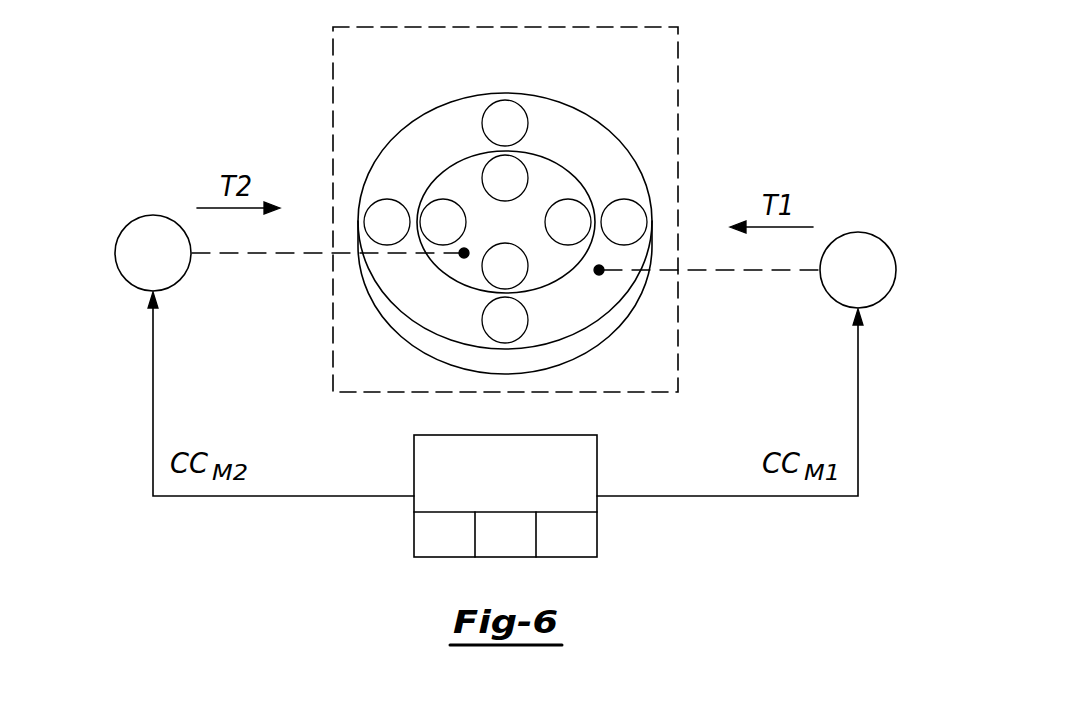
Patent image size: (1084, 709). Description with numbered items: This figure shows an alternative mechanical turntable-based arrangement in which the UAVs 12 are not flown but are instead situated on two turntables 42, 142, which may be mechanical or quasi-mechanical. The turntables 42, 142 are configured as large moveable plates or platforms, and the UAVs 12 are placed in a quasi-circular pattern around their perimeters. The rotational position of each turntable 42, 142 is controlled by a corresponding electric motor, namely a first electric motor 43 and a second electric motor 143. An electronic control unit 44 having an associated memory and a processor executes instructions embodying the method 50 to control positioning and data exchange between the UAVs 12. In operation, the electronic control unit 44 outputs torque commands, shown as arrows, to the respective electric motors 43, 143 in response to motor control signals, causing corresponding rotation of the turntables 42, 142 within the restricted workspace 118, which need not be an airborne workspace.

The restricted workspace 118 is at (678, 50).
The turntable 42 is at (432, 103).
The turntable 142 is at (570, 170).
The UAVs 12 is at (527, 116).
The electric motor (M2) 143 is at (115, 255).
The electric motor (M1) 43 is at (896, 270).
The electronic control unit (ECU) 44 is at (542, 496).
The method 50 is at (566, 537).